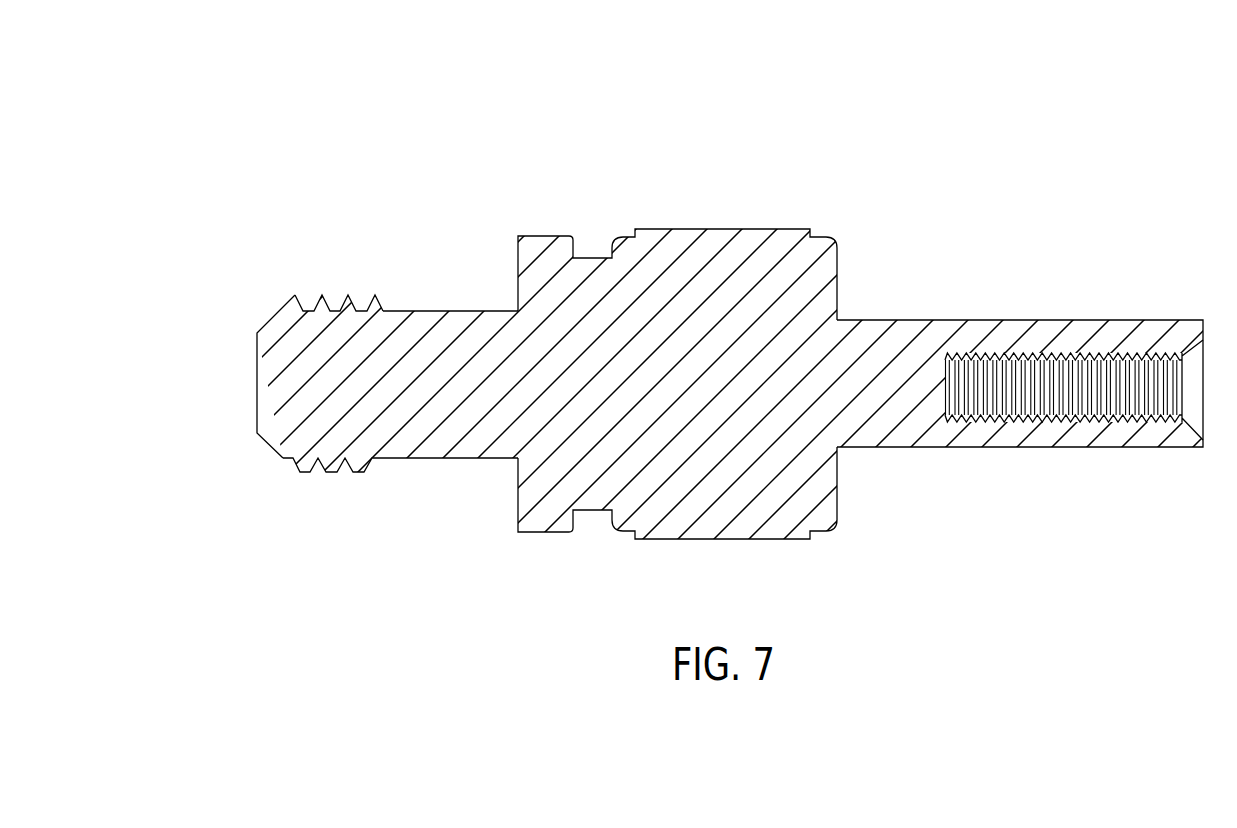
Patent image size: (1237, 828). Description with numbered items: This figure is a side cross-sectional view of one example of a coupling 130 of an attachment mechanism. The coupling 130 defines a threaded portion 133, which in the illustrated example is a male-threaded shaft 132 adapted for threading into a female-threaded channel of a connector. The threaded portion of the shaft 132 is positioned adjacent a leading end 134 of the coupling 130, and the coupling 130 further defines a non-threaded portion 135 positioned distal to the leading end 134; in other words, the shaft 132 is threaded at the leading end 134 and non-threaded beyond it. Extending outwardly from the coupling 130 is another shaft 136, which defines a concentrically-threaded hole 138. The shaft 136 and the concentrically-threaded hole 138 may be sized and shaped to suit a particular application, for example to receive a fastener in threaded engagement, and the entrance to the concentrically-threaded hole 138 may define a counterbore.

The coupling 130 is at (1000, 136).
The male-threaded shaft 132 is at (289, 322).
The threaded portion 133 is at (382, 473).
The leading end 134 is at (268, 378).
The non-threaded portion 135 is at (516, 290).
The shaft 136 is at (903, 438).
The concentrically-threaded hole 138 is at (1023, 366).